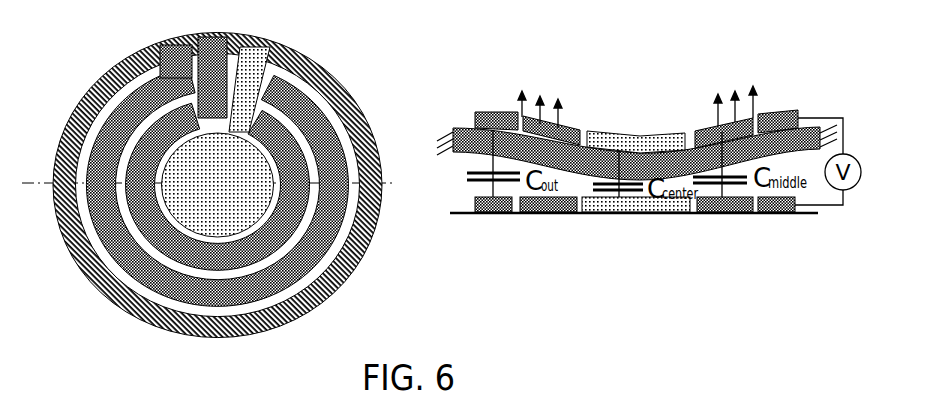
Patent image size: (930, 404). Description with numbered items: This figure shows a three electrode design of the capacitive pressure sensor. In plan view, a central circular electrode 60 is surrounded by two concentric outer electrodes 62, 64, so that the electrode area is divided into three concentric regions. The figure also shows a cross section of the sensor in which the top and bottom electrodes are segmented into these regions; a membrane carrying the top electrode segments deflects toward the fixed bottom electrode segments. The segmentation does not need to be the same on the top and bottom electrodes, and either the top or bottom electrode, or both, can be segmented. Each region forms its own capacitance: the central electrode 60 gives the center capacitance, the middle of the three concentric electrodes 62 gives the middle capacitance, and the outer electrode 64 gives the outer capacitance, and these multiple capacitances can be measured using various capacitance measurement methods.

The central circular electrode 60 is at (247, 165).
The concentric outer electrode 62 is at (290, 228).
The concentric outer electrode 64 is at (138, 98).